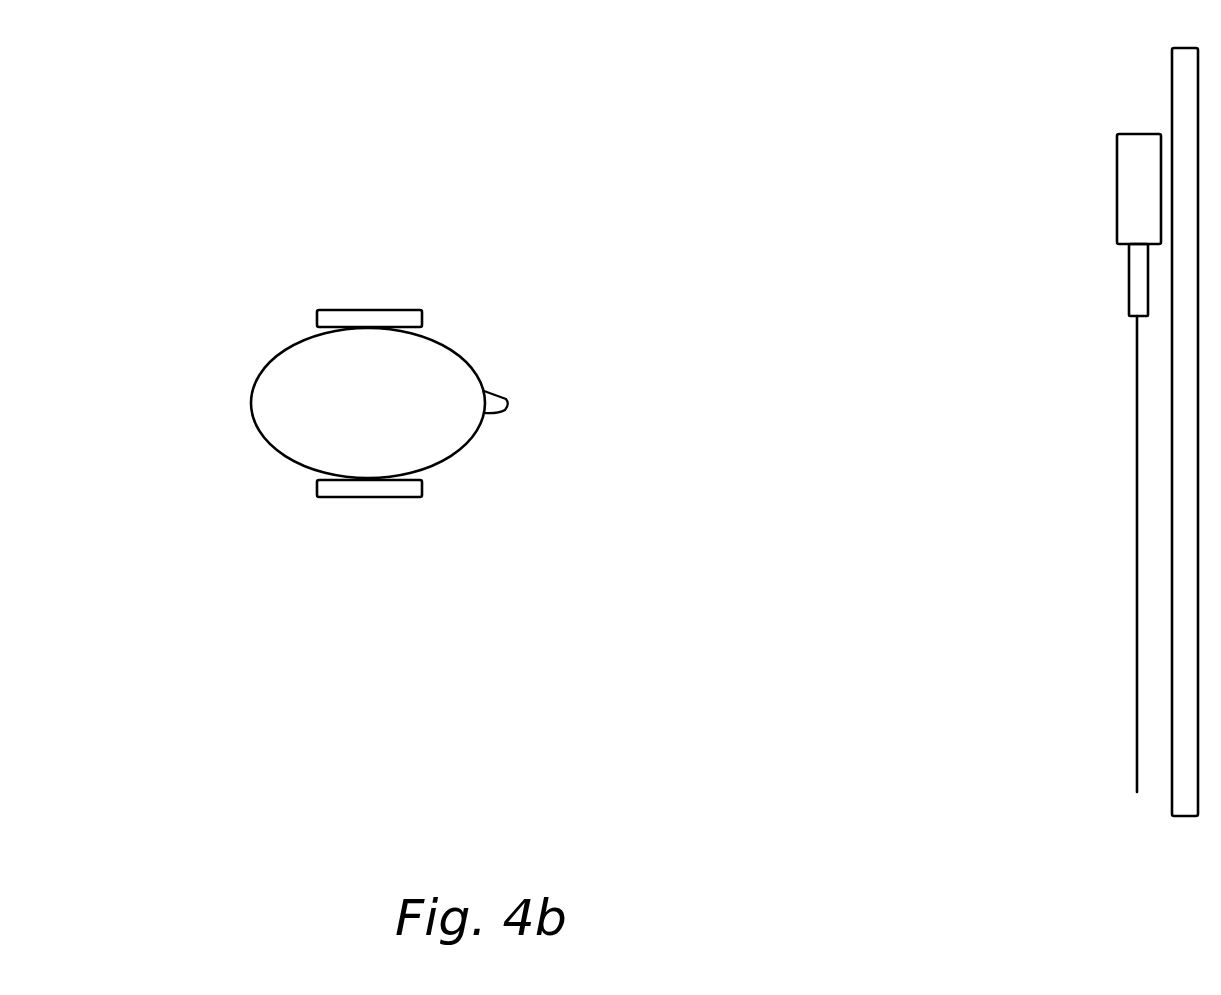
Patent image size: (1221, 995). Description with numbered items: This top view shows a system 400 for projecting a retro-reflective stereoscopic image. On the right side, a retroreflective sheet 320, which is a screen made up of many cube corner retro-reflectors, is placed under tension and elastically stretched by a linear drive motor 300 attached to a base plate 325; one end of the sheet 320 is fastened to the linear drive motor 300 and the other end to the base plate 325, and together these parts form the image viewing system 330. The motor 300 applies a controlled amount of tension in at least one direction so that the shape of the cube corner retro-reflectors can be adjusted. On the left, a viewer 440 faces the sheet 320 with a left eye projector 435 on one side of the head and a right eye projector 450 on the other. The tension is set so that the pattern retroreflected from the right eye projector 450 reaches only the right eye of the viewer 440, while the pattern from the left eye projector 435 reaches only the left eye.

The linear drive motor 300 is at (1125, 196).
The retroreflective sheet 320 is at (1137, 568).
The base plate 325 is at (1172, 470).
The image viewing system 330 is at (1040, 125).
The system 400 is at (812, 640).
The left eye projector 435 is at (322, 318).
The viewer 440 is at (282, 370).
The right eye projector 450 is at (348, 497).